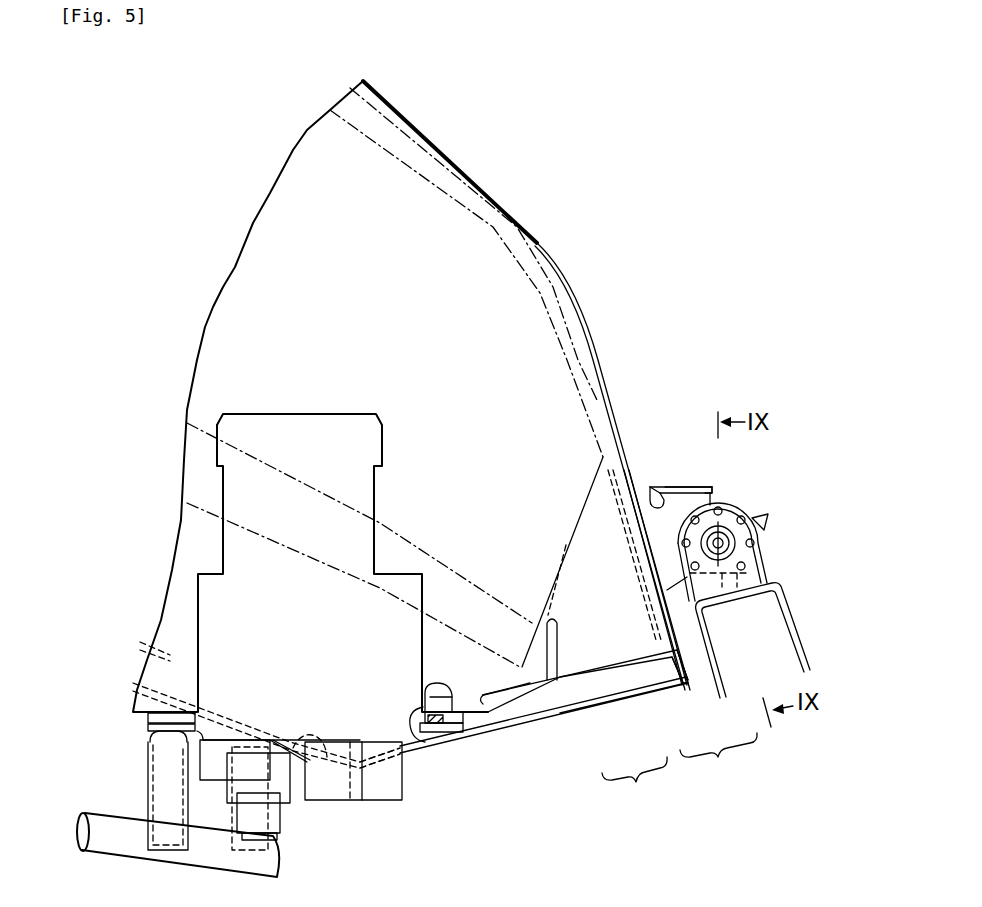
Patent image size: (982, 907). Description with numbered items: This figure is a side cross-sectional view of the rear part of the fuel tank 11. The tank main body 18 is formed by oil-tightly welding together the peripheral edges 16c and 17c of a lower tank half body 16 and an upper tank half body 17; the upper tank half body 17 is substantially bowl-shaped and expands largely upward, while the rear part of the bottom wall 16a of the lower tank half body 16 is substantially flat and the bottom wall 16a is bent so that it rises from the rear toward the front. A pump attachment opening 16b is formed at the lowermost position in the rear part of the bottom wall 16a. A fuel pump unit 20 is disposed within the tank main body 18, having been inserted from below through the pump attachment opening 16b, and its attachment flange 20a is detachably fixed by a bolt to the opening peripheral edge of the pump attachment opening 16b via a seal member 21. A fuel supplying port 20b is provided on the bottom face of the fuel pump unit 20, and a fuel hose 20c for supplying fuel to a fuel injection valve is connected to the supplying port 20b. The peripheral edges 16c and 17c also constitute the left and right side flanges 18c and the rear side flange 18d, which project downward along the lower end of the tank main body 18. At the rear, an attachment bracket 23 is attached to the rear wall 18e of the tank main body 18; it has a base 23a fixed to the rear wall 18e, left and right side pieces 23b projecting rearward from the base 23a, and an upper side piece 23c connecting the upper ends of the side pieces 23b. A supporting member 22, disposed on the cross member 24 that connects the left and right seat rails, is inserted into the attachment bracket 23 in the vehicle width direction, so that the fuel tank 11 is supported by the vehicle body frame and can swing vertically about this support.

The fuel tank 11 is at (528, 104).
The lower tank half body 16 is at (597, 675).
The bottom wall 16a is at (533, 698).
The pump attachment opening 16b is at (420, 718).
The peripheral edge 16c is at (677, 668).
The upper tank half body 17 is at (669, 606).
The peripheral edge 17c is at (692, 674).
The tank main body 18 is at (634, 781).
The side flange 18c is at (573, 715).
The rear side flange 18d is at (718, 759).
The rear wall 18e is at (622, 441).
The fuel pump unit 20 is at (386, 447).
The attachment flange 20a is at (470, 728).
The fuel supplying port 20b is at (264, 818).
The fuel hose 20c is at (103, 812).
The seal member 21 is at (455, 743).
The supporting member 22 is at (749, 563).
The attachment bracket 23 is at (689, 485).
The base 23a is at (654, 484).
The side piece 23b is at (713, 496).
The upper side piece 23c is at (709, 486).
The cross member 24 is at (789, 600).